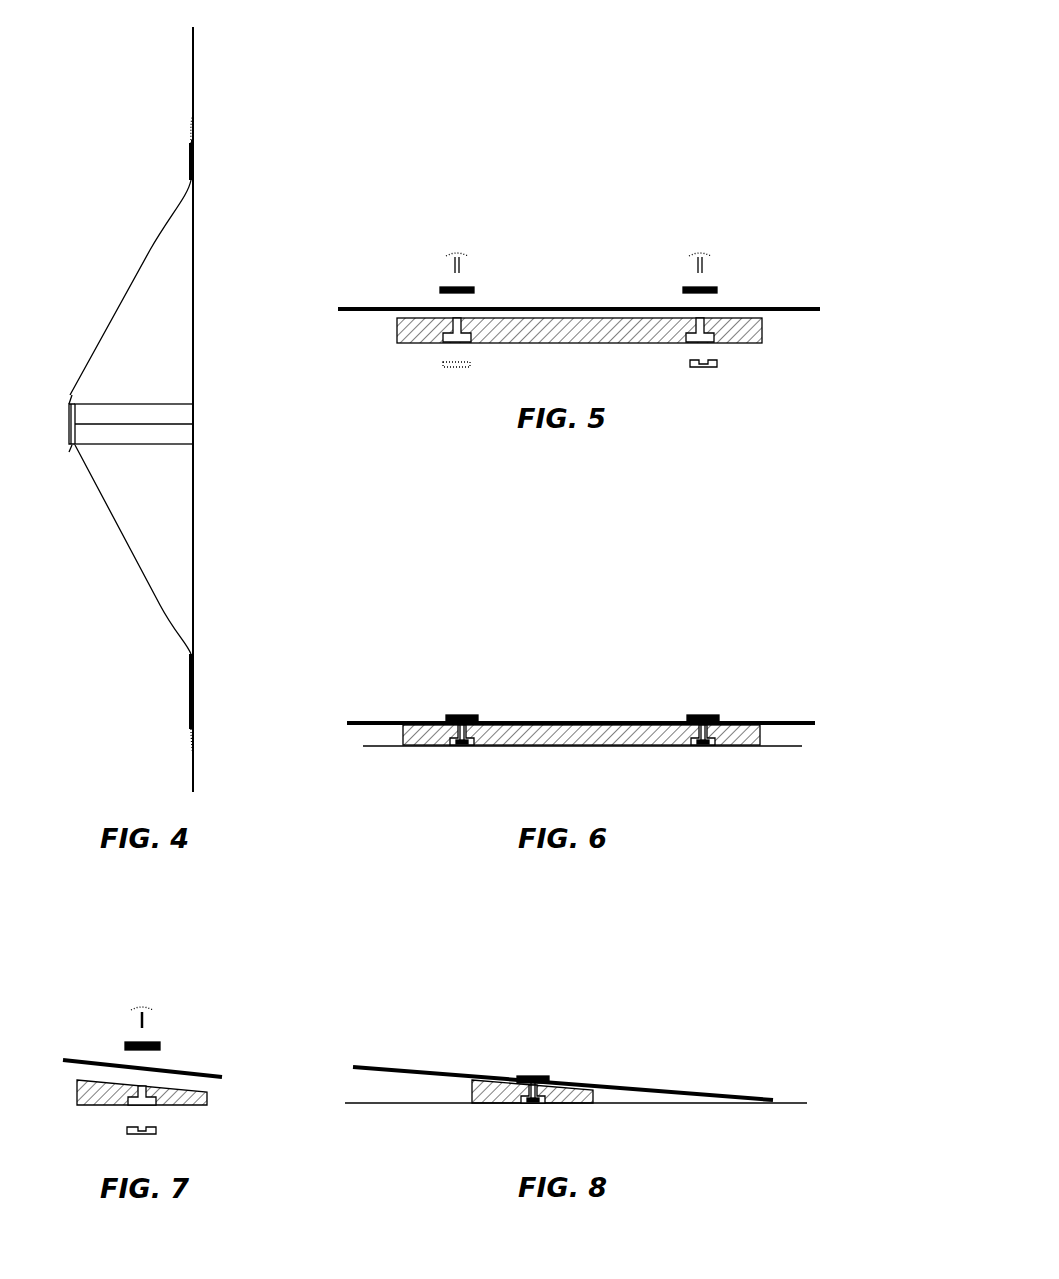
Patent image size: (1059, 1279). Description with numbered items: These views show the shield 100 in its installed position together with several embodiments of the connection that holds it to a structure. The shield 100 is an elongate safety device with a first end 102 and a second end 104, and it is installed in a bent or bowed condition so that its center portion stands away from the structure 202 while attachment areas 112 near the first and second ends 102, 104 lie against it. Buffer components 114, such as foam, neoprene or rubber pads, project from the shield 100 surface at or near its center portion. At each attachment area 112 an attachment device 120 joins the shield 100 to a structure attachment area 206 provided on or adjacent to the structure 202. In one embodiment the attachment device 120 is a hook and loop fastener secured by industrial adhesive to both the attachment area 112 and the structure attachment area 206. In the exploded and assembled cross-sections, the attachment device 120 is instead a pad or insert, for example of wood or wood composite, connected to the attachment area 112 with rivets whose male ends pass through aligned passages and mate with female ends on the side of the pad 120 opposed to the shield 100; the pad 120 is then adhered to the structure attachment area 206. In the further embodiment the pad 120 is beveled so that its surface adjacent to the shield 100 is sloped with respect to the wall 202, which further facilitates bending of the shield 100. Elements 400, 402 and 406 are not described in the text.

In FIG. 4, the shield 100 is at (95, 580).
In FIG. 6, the shield 100 is at (352, 727).
In FIG. 8, the shield 100 is at (378, 1073).
In FIG. 4, the first end 102 is at (185, 100).
In FIG. 4, the second end 104 is at (188, 742).
In FIG. 4, the attachment area 112 is at (175, 153).
In FIG. 5, the attachment area 112 is at (590, 295).
In FIG. 6, the attachment area 112 is at (593, 700).
In FIG. 7, the attachment area 112 is at (103, 1053).
In FIG. 8, the attachment area 112 is at (562, 1075).
In FIG. 4, the buffer component 114 is at (70, 447).
In FIG. 4, the attachment device 120 is at (195, 145).
In FIG. 5, the attachment device 120 is at (622, 343).
In FIG. 6, the attachment device 120 is at (540, 728).
In FIG. 7, the attachment device 120 is at (203, 1107).
In FIG. 8, the attachment device 120 is at (492, 1080).
In FIG. 6, the structure 202 is at (380, 748).
In FIG. 8, the structure 202 is at (405, 1105).
In FIG. 6, the structure attachment area 206 is at (497, 757).
In FIG. 8, the structure attachment area 206 is at (497, 1113).
In FIG. 4, the mounting bracket 400 is at (170, 437).
In FIG. 4, the support structure 402 is at (195, 360).
In FIG. 4, the fastener 406 is at (207, 152).